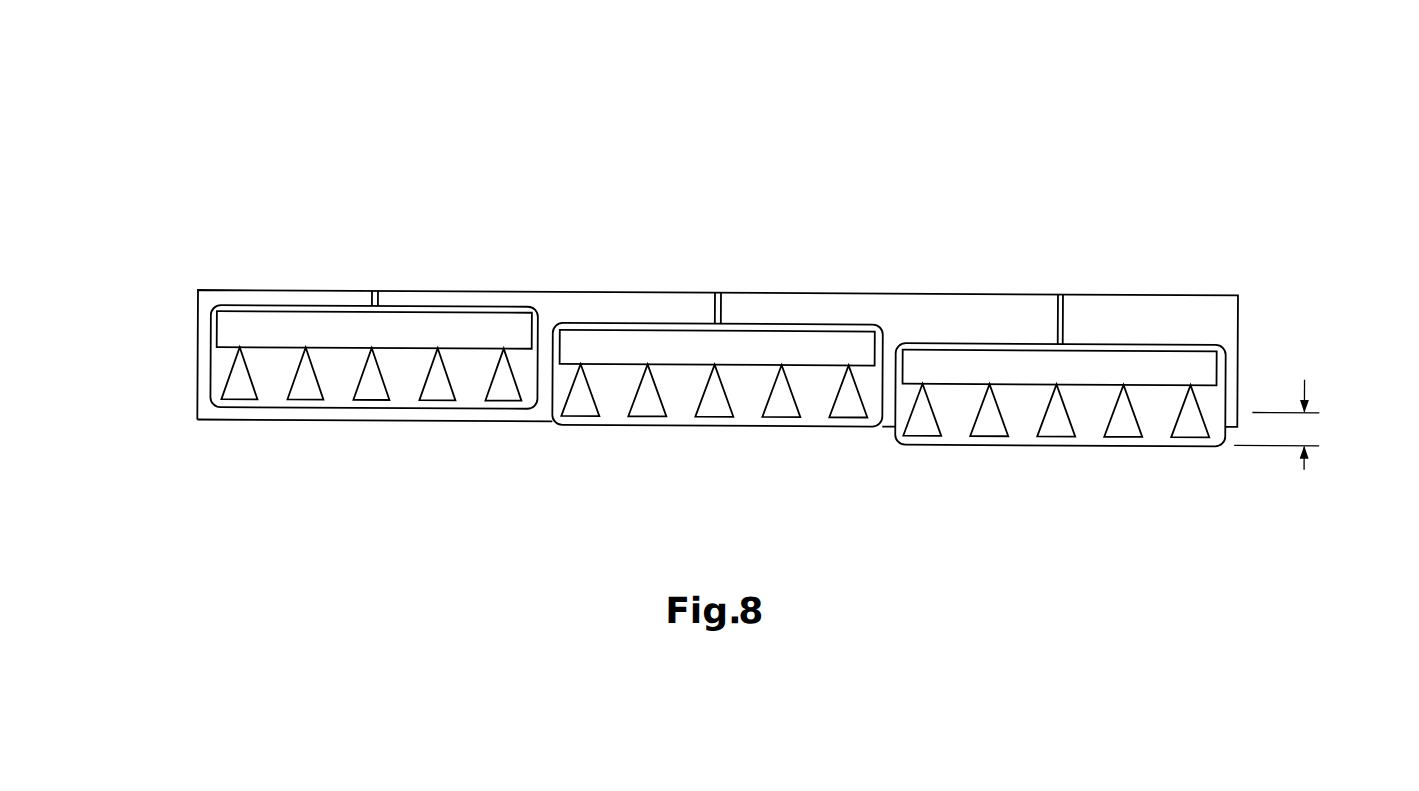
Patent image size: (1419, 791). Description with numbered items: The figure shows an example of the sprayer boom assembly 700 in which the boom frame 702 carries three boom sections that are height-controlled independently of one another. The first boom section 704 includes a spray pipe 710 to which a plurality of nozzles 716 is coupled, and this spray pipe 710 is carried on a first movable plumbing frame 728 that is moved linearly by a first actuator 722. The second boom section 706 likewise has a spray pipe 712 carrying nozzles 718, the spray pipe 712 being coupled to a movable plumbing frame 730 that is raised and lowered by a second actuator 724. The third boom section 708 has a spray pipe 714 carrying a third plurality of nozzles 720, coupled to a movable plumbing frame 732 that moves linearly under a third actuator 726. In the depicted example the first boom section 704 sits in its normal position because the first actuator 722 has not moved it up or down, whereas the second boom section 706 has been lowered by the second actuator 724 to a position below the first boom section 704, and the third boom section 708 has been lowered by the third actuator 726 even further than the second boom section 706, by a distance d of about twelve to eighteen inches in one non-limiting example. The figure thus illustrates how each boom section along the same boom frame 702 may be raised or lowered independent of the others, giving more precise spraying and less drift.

The spray boom assembly 700 is at (1248, 160).
The boom frame 702 is at (1243, 316).
The first boom section 704 is at (310, 273).
The second boom section 706 is at (657, 282).
The third boom section 708 is at (1006, 276).
The spray pipe 710 is at (472, 325).
The spray pipe 712 is at (815, 342).
The spray pipe 714 is at (1153, 355).
The nozzles 716 is at (373, 389).
The nozzles 718 is at (718, 407).
The nozzles 720 is at (1123, 423).
The first actuator 722 is at (374, 296).
The second actuator 724 is at (719, 309).
The third actuator 726 is at (1064, 312).
The first movable plumbing frame 728 is at (211, 354).
The movable plumbing frame 730 is at (553, 391).
The movable plumbing frame 732 is at (957, 441).
The distance d is at (1305, 422).